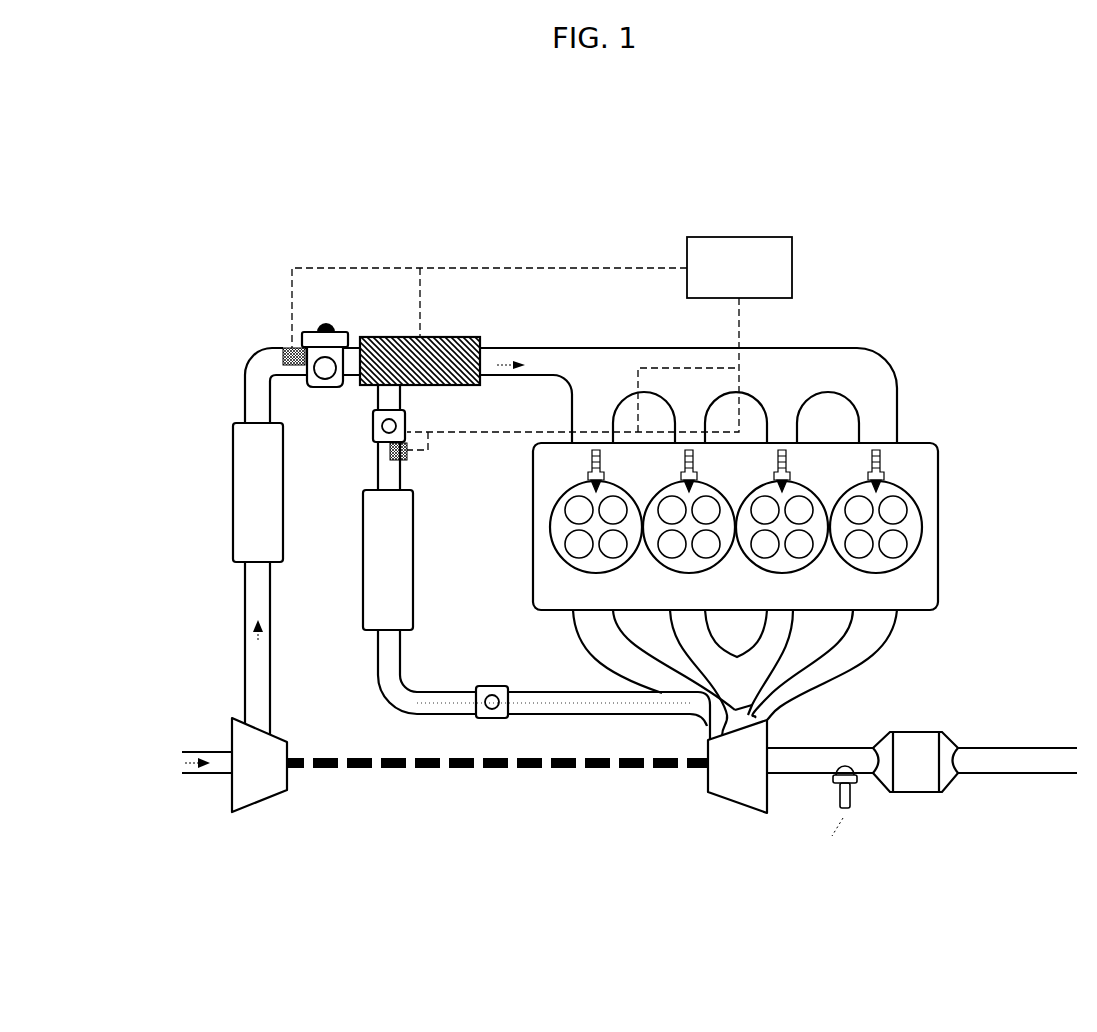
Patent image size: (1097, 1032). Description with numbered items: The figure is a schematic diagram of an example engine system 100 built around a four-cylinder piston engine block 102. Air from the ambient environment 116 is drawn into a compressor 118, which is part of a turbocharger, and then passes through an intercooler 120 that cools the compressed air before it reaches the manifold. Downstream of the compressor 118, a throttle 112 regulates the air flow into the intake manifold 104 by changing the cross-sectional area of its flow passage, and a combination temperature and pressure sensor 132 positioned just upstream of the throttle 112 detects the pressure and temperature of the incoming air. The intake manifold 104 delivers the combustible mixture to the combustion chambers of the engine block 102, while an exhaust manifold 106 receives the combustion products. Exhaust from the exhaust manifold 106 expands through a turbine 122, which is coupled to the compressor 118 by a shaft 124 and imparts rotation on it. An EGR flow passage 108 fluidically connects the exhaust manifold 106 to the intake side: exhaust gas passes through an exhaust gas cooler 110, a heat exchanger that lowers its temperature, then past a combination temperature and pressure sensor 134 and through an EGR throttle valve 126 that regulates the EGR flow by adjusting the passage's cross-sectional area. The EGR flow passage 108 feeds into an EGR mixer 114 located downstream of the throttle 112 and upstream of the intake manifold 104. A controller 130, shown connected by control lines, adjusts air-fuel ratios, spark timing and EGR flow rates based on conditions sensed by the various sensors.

The engine system 100 is at (255, 208).
The engine block 102 is at (930, 528).
The intake manifold 104 is at (914, 348).
The exhaust manifold 106 is at (916, 662).
The EGR flow passage 108 is at (407, 680).
The exhaust gas cooler 110 is at (417, 530).
The throttle 112 is at (317, 327).
The EGR mixer 114 is at (420, 337).
The ambient environment 116 is at (135, 773).
The compressor 118 is at (255, 803).
The intercooler 120 is at (233, 488).
The turbine 122 is at (747, 812).
The shaft 124 is at (490, 770).
The EGR throttle valve 126 is at (407, 422).
The controller 130 is at (769, 285).
The combination temperature and pressure sensor 132 is at (270, 355).
The combination temperature and pressure sensor 134 is at (407, 452).